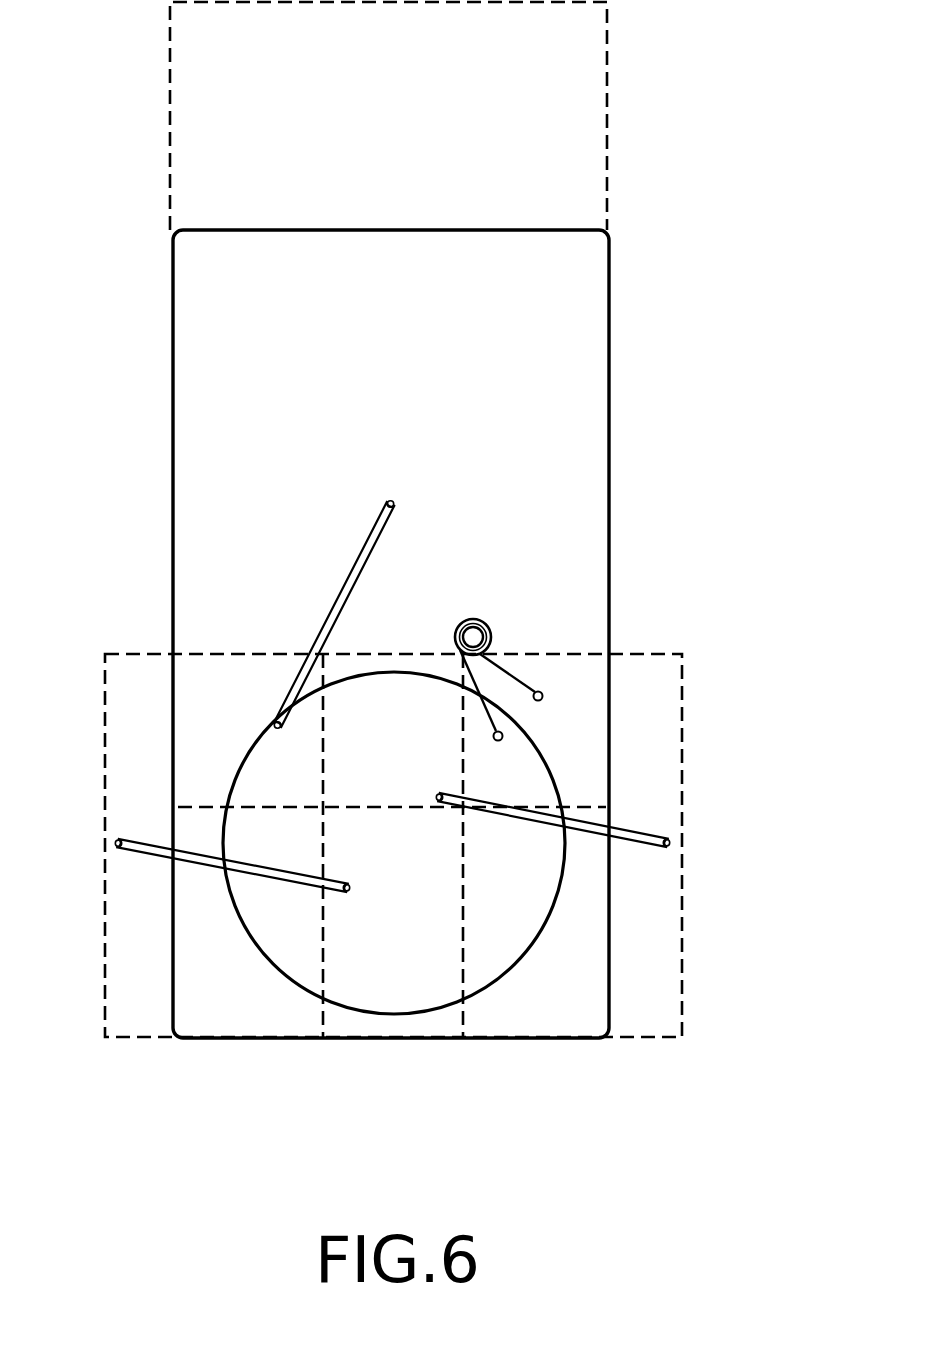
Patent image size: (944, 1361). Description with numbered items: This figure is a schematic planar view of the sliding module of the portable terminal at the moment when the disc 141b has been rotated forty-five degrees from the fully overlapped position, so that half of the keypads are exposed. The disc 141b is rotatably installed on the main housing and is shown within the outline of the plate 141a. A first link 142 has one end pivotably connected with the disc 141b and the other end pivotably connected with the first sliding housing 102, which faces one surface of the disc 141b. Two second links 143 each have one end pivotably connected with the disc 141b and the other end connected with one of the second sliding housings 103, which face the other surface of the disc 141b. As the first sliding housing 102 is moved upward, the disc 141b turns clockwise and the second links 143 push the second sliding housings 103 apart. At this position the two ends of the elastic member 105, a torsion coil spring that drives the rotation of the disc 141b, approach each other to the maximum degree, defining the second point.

The first sliding housing 102 is at (567, 128).
The second sliding housing 103 is at (683, 965).
The elastic member 105 is at (493, 620).
The first plate 141a is at (570, 409).
The disc 141b is at (402, 990).
The first link 142 is at (340, 592).
The second link 143 is at (207, 862).